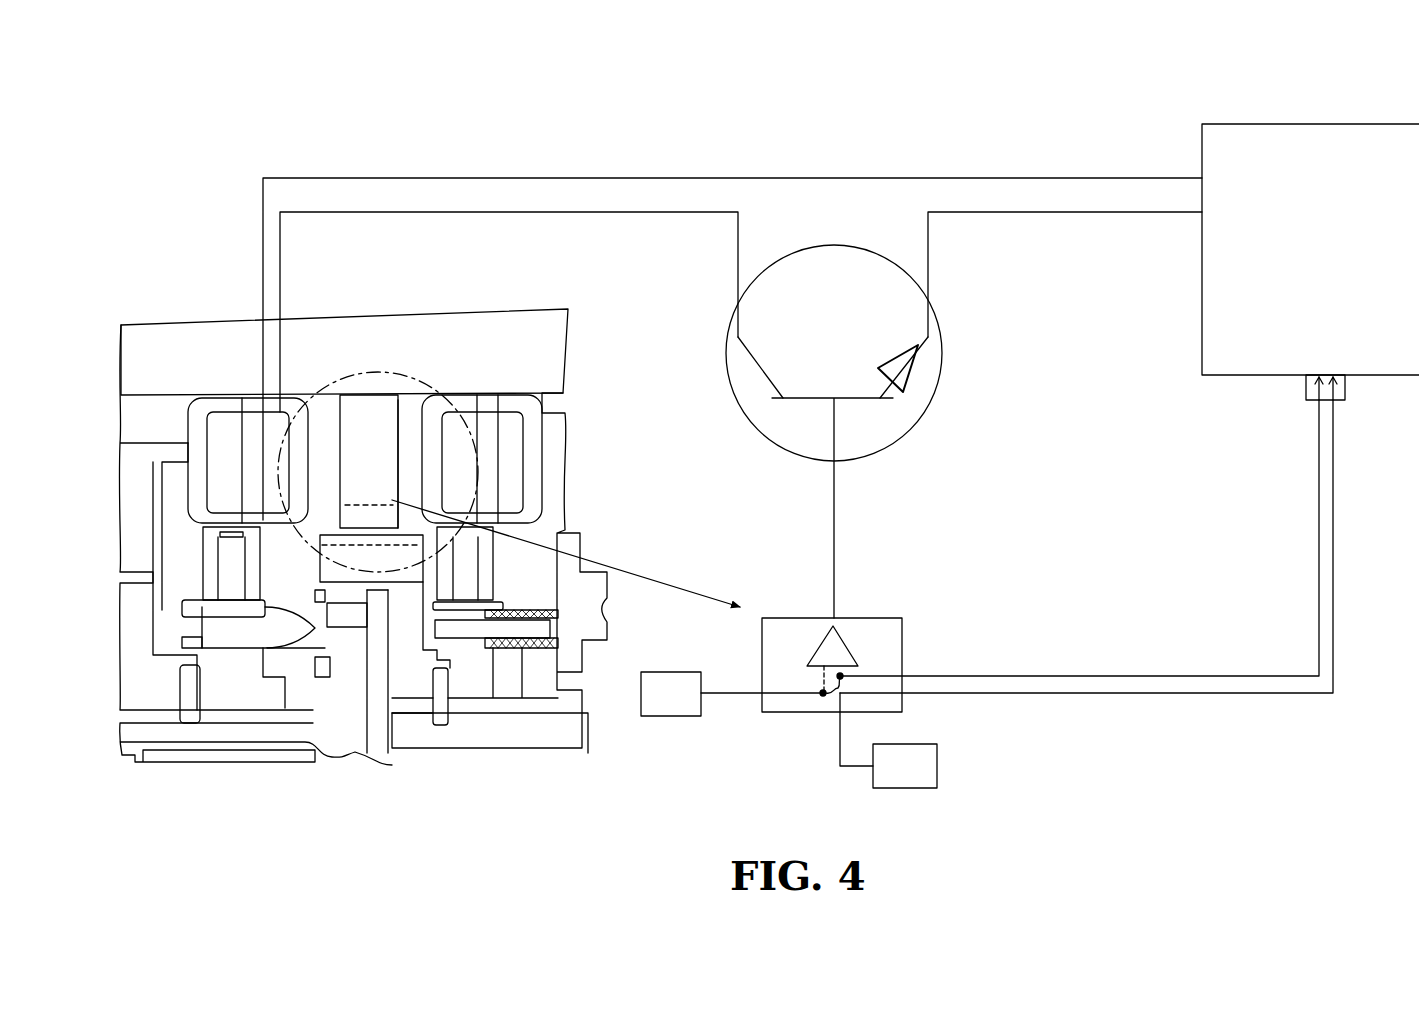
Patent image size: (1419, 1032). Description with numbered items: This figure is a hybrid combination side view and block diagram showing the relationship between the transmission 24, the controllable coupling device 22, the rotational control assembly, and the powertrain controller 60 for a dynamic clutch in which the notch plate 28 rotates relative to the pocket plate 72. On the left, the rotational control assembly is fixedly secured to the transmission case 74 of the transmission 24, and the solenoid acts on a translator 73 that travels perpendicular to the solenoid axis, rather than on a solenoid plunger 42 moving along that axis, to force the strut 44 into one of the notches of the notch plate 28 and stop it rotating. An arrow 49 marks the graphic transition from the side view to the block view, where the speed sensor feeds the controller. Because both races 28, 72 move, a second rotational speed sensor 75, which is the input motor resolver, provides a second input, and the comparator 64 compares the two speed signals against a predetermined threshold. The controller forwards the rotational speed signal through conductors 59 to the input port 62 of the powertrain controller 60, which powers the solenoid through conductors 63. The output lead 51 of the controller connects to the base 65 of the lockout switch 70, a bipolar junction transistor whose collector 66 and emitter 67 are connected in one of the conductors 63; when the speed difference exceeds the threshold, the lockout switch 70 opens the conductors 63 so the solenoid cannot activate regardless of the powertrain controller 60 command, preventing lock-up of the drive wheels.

The controllable coupling device 22 is at (338, 760).
The transmission 24 is at (222, 318).
The notch plate 28 is at (322, 565).
The solenoid plunger 42 is at (200, 630).
The strut 44 is at (338, 630).
The arrow 49 is at (645, 575).
The output lead 51 is at (727, 700).
The conductors 59 is at (1320, 500).
The powertrain controller 60 is at (1330, 124).
The input port 62 is at (1347, 385).
The conductors 63 is at (1112, 212).
The comparator 64 is at (818, 648).
The base 65 is at (808, 400).
The collector 66 is at (740, 345).
The emitter 67 is at (932, 342).
The lockout switch 70 is at (730, 400).
The pocket plate 72 is at (322, 668).
The translator 73 is at (203, 560).
The transmission case 74 is at (118, 345).
The second rotational speed sensor 75 is at (938, 768).